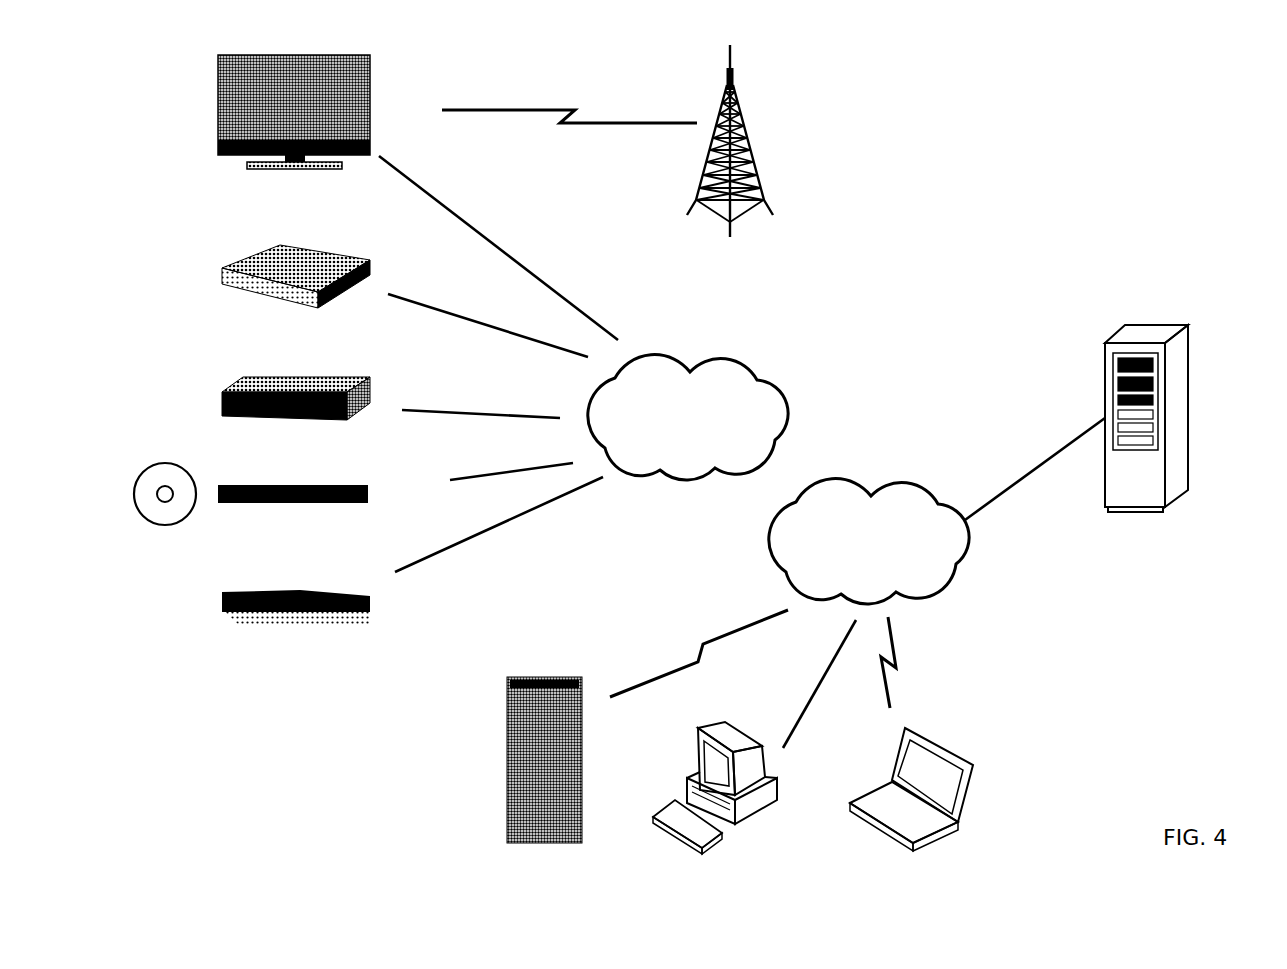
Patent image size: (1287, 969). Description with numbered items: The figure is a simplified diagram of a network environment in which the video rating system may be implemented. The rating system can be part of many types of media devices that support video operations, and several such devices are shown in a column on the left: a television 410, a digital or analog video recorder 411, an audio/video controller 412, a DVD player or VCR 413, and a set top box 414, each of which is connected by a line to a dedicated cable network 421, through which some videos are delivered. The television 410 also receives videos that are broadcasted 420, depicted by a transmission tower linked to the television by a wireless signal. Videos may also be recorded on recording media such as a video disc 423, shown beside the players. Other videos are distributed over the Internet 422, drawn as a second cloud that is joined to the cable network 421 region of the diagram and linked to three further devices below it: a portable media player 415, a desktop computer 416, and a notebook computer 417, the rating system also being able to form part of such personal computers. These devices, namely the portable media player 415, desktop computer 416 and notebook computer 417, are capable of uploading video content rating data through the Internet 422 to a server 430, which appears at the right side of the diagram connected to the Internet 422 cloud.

The television 410 is at (378, 103).
The digital or analog video recorder 411 is at (372, 262).
The audio/video controller 412 is at (372, 387).
The DVD player or VCR 413 is at (370, 493).
The set top box 414 is at (372, 600).
The portable media player 415 is at (588, 727).
The desktop computer 416 is at (732, 727).
The notebook computer 417 is at (912, 728).
The broadcast 420 is at (740, 108).
The cable network 421 is at (680, 356).
The Internet 422 is at (922, 481).
The video disc 423 is at (168, 462).
The server 430 is at (1124, 324).